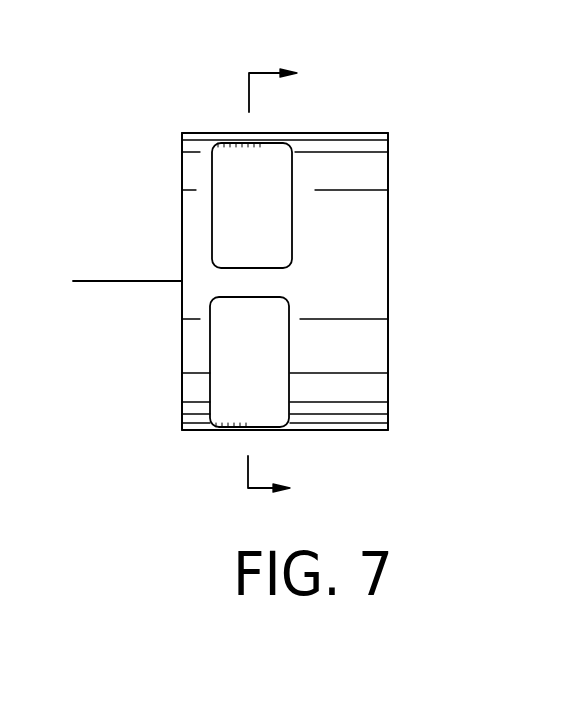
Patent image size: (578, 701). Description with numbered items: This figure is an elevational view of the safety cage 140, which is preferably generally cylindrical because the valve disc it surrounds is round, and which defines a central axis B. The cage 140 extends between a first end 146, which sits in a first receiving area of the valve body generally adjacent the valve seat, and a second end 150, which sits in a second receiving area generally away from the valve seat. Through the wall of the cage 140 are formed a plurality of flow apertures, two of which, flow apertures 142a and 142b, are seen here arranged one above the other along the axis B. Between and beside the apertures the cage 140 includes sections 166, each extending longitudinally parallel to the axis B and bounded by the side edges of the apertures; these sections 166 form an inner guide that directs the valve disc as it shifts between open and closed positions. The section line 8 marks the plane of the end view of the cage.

The cage 140 is at (322, 133).
The flow aperture 142a is at (232, 178).
The flow aperture 142b is at (235, 392).
The section 166 is at (245, 278).
The second end 150 is at (387, 283).
The first end 146 is at (179, 285).
The axis B is at (102, 278).
The section line 8- 8 is at (284, 280).